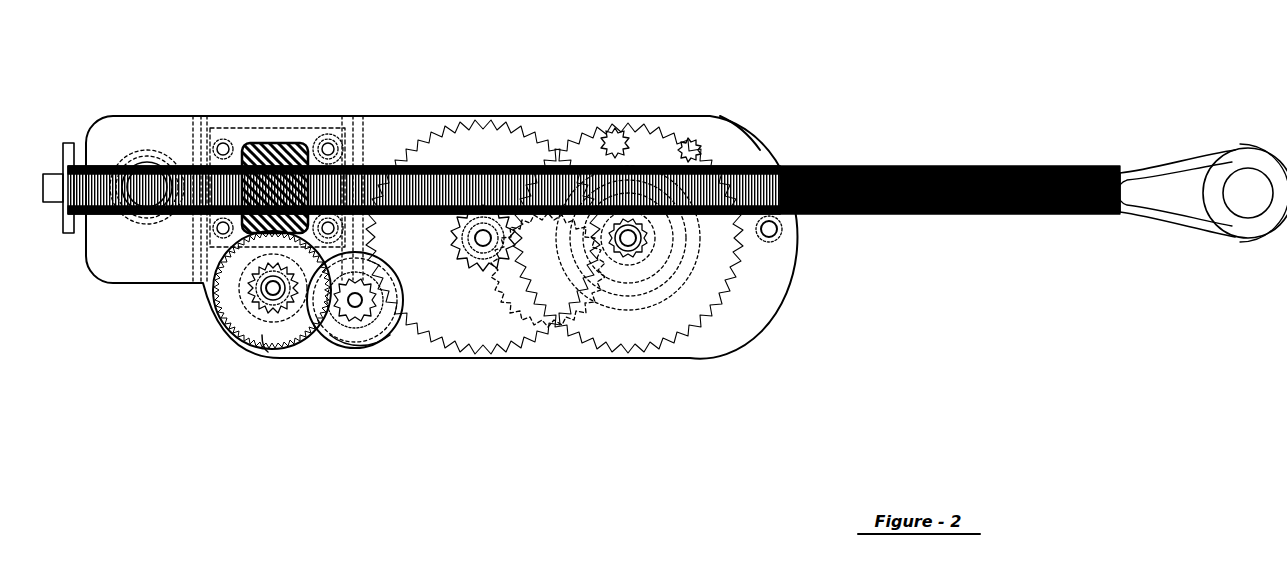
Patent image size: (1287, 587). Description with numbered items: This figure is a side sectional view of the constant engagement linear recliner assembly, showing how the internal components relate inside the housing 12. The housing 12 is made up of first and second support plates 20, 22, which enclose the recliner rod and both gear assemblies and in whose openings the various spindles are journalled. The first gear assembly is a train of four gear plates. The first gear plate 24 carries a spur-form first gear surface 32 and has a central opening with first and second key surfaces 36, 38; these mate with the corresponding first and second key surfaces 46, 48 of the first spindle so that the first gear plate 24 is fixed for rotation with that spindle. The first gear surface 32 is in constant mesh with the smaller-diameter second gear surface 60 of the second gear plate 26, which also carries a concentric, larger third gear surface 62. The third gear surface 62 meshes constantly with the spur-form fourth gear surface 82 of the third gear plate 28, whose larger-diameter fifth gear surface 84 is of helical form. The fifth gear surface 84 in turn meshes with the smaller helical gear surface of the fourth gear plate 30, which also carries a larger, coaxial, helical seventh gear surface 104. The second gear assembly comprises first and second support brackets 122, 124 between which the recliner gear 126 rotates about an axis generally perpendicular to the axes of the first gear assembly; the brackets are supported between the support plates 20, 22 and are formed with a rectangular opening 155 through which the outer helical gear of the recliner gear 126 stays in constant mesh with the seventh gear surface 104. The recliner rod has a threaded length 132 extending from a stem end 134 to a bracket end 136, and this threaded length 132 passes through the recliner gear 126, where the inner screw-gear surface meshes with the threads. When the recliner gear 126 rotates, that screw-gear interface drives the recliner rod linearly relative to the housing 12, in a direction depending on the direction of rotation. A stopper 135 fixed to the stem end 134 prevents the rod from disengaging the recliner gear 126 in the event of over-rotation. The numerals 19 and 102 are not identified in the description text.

The housing 12 is at (418, 116).
The threaded rod 19 is at (1095, 168).
The first support plate 20 is at (753, 95).
The second support plate 22 is at (717, 120).
The first gear plate 24 is at (690, 285).
The second gear plate 26 is at (514, 310).
The third gear plate 28 is at (375, 350).
The fourth gear plate 30 is at (270, 338).
The first gear surface 32 is at (588, 348).
The first key surface 36 is at (742, 212).
The second key surface 38 is at (743, 255).
The first key surface 46 is at (642, 214).
The second key surface 48 is at (653, 212).
The second gear surface 60 is at (478, 265).
The third gear surface 62 is at (522, 345).
The fourth gear surface 82 is at (392, 330).
The fifth gear surface 84 is at (372, 328).
The pinion 102 is at (282, 312).
The seventh gear surface 104 is at (227, 333).
The first support bracket 122 is at (277, 140).
The second support bracket 124 is at (243, 138).
The recliner gear 126 is at (290, 143).
The threaded length 132 is at (933, 168).
The stem end 134 is at (62, 150).
The stopper 135 is at (70, 233).
The bracket end 136 is at (1213, 183).
The rectangular opening 155 is at (270, 233).